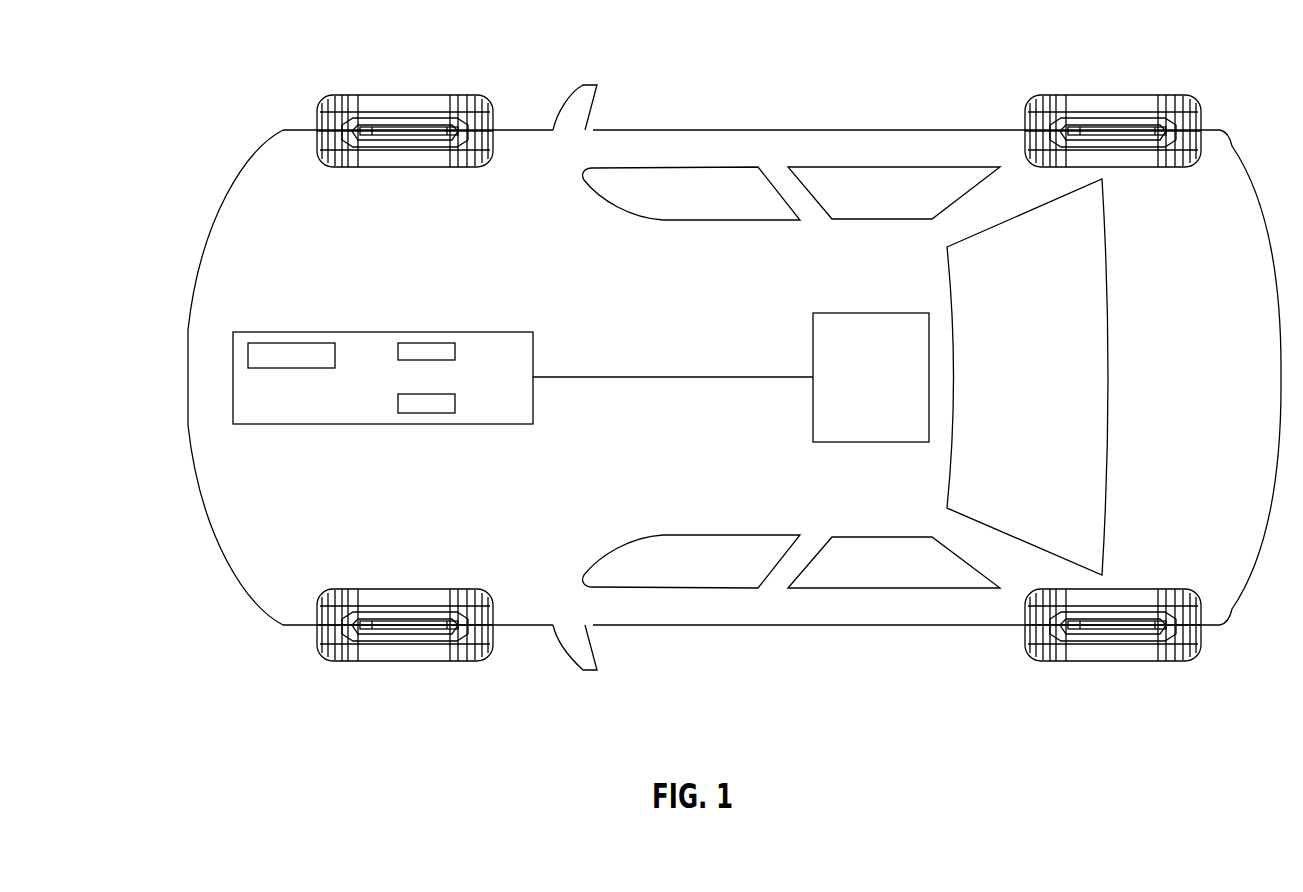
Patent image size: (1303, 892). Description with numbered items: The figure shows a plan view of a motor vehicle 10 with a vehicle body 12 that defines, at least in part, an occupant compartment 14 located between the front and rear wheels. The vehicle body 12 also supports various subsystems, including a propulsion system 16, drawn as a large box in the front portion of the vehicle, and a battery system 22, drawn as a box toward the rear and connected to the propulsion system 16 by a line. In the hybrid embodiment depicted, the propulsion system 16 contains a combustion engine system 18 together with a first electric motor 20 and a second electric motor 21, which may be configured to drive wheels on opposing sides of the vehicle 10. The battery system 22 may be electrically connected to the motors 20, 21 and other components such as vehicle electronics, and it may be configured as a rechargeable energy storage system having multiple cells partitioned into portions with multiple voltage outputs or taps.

The motor vehicle 10 is at (166, 130).
The vehicle body 12 is at (703, 130).
The occupant compartment 14 is at (812, 513).
The propulsion system 16 is at (233, 343).
The combustion engine system 18 is at (248, 356).
The first electric motor 20 is at (425, 343).
The second electric motor 21 is at (427, 415).
The battery system 22 is at (870, 313).